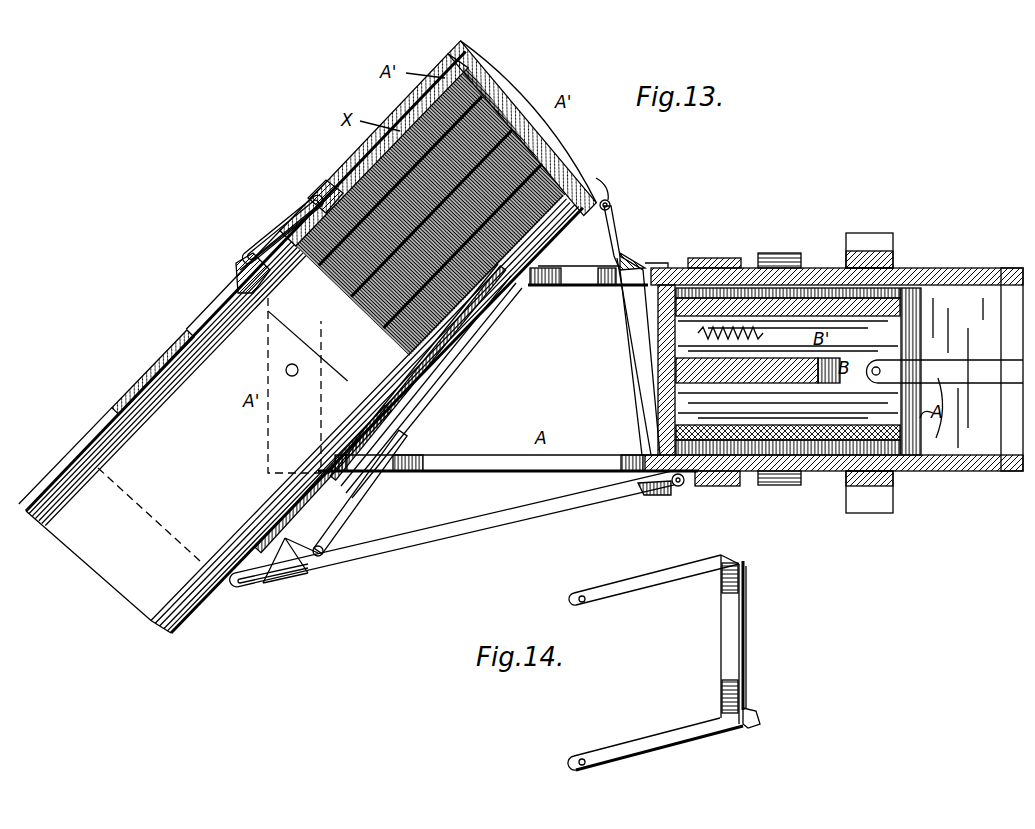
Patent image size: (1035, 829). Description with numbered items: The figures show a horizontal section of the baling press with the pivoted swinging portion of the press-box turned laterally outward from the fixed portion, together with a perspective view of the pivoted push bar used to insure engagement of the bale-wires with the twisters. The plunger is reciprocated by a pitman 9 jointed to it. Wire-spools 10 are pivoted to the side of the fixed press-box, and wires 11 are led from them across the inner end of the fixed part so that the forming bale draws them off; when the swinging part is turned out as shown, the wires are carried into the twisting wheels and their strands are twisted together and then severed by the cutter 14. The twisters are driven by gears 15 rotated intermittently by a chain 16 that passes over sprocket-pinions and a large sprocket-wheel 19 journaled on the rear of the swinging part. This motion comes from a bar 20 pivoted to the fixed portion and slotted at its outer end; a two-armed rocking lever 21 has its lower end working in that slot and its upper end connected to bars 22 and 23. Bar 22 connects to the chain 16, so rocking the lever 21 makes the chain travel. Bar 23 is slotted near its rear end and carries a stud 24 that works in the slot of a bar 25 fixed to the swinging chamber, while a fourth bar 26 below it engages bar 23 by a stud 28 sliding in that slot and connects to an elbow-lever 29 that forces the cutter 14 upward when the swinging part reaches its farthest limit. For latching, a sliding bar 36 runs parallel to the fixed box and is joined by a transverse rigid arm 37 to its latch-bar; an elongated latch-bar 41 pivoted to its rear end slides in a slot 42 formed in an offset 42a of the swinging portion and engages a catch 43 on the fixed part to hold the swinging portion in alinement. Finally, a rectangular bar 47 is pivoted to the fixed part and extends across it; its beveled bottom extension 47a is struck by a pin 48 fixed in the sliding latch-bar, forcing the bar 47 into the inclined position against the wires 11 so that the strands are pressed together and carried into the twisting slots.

In FIG. 13, the pitman 9 is at (945, 370).
In FIG. 13, the wire-spools 10 is at (779, 365).
In FIG. 13, the wires 11 is at (487, 62).
In FIG. 13, the cutter 14 is at (646, 192).
In FIG. 13, the gears 15 is at (583, 278).
In FIG. 13, the chain 16 is at (550, 278).
In FIG. 13, the sprocket-wheel 19 is at (323, 478).
In FIG. 13, the bar 20 is at (330, 565).
In FIG. 13, the crank-shaft or rocking lever 21 is at (266, 548).
In FIG. 13, the bar 22 is at (333, 496).
In FIG. 13, the bar 23 is at (400, 425).
In FIG. 13, the stud 24 is at (465, 360).
In FIG. 13, the bar 25 is at (488, 328).
In FIG. 13, the bar 26 is at (452, 365).
In FIG. 13, the stud 28 is at (395, 437).
In FIG. 13, the elbow-lever 29 is at (700, 326).
In FIG. 13, the sliding bar 36 is at (235, 258).
In FIG. 13, the transverse rigid arm 37 is at (1000, 302).
In FIG. 13, the latch-bar 41 is at (325, 186).
In FIG. 13, the slot 42 is at (295, 213).
In FIG. 13, the offset 42a is at (272, 228).
In FIG. 13, the catch 43 is at (680, 252).
In FIG. 13, the rectangular bar 47 is at (633, 332).
In FIG. 14, the rectangular bar 47 is at (715, 620).
In FIG. 13, the bottom extension 47a is at (632, 255).
In FIG. 14, the bottom extension 47a is at (742, 698).
In FIG. 13, the pin 48 is at (655, 240).